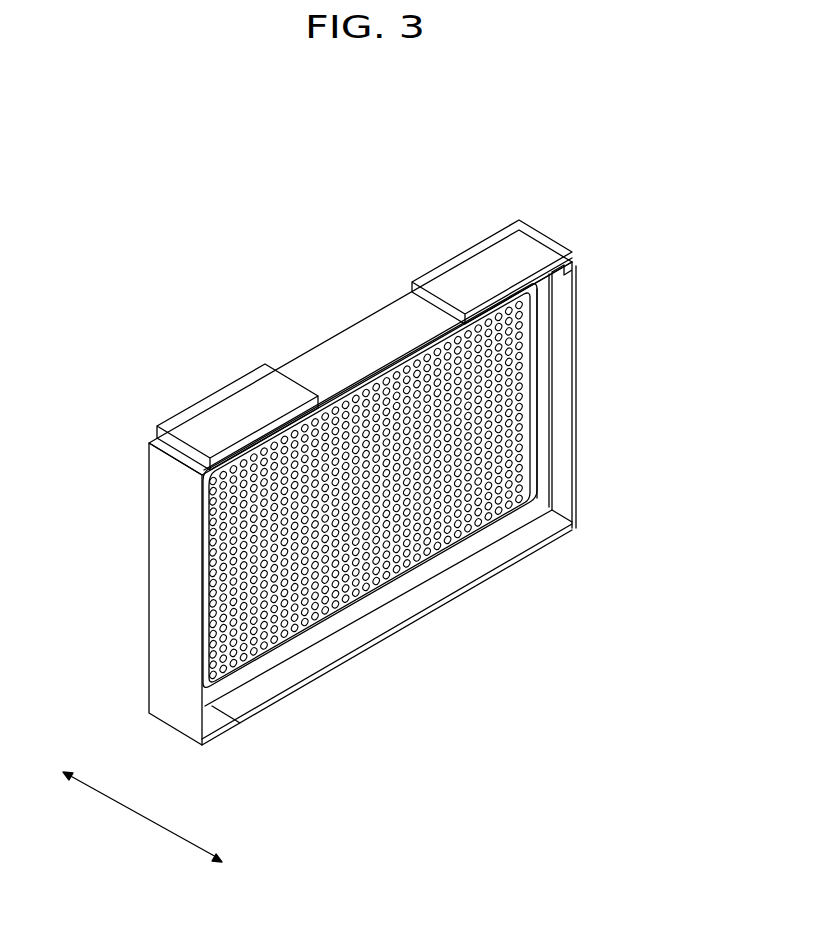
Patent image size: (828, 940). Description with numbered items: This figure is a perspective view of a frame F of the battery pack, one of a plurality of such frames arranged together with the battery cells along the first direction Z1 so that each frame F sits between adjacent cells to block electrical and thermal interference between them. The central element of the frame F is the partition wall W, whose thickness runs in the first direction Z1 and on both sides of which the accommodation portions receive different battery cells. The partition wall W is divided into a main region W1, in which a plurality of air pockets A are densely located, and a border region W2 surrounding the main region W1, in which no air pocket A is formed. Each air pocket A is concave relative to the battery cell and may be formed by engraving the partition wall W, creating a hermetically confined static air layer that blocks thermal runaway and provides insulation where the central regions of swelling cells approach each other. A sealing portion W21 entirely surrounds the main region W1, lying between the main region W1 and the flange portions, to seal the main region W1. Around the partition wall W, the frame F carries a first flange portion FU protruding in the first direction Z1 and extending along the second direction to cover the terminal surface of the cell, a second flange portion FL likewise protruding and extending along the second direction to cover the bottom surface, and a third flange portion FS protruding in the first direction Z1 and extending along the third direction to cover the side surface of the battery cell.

The frame F is at (384, 447).
The first flange portion FU is at (362, 352).
The third flange portion FS is at (583, 366).
The second flange portion FL is at (393, 618).
The partition wall W is at (446, 511).
The main region W1 is at (399, 519).
The border region W2 is at (446, 486).
The sealing portion W21 is at (545, 440).
The air pocket A is at (266, 620).
The first direction Z1 is at (142, 817).